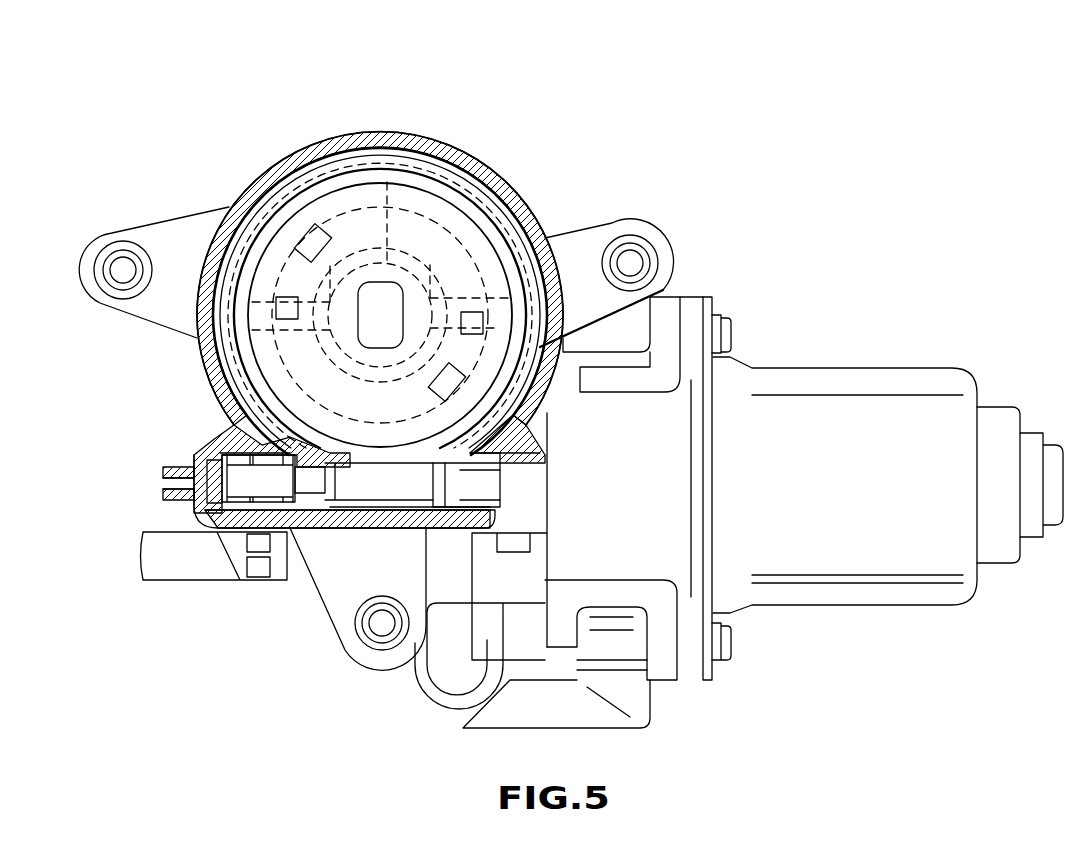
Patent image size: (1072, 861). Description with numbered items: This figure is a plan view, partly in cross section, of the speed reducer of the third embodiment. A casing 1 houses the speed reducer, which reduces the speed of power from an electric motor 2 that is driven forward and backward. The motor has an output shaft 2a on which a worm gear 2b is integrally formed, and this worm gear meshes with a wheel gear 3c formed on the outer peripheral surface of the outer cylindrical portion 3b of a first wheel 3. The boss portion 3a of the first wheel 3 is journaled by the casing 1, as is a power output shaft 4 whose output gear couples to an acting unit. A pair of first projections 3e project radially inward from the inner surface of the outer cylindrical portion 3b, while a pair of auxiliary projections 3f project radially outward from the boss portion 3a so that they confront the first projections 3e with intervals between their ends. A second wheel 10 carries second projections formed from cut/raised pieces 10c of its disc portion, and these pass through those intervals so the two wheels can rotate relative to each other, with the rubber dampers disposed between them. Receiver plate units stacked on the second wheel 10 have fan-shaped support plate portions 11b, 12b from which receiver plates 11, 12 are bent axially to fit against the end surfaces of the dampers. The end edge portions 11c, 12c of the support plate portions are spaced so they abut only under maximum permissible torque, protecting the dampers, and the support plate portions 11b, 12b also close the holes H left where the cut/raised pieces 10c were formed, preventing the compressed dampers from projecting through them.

The casing 1 is at (520, 262).
The electric motor 2 is at (866, 428).
The output shaft 2a is at (493, 488).
The worm gear 2b is at (297, 533).
The first wheel 3 is at (457, 173).
The boss portion 3a is at (413, 223).
The outer cylindrical portion 3b is at (497, 255).
The wheel gear 3c is at (370, 467).
The first projections 3e is at (258, 312).
The auxiliary projections 3f is at (613, 230).
The power output shaft 4 is at (372, 327).
The second wheel 10 is at (268, 237).
The cut/raised pieces 10c is at (263, 248).
The receiver plates 11 is at (298, 232).
The support plate portions 11b is at (353, 213).
The end edge portions 11c is at (377, 213).
The receiver plates 12 is at (618, 262).
The support plate portions 12b is at (527, 223).
The end edge portions 12c is at (480, 203).
The holes H is at (323, 227).